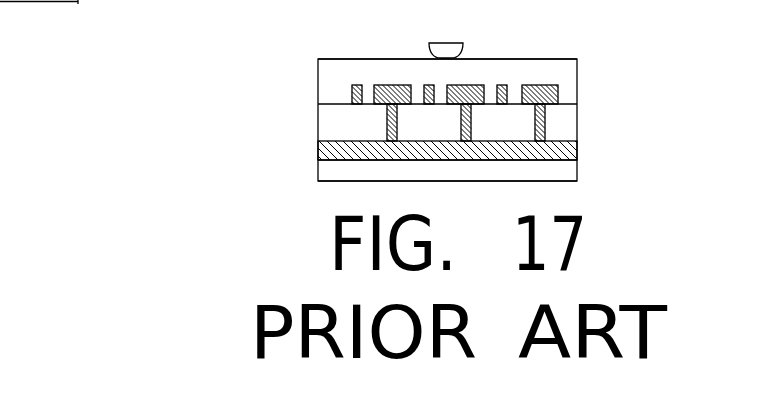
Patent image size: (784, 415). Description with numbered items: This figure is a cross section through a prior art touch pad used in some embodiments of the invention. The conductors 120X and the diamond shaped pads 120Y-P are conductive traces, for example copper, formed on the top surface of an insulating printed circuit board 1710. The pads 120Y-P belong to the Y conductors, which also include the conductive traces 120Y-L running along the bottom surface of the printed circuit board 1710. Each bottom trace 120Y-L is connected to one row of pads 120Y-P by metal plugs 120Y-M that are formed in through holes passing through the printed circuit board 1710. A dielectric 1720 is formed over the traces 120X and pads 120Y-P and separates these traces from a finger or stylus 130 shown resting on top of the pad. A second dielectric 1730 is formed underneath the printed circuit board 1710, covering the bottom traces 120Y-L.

The printed circuit board 1710 is at (577, 117).
The dielectric 1720 is at (559, 60).
The dielectric 1730 is at (562, 182).
The conductive traces 120Y-L is at (577, 152).
The diamond shaped pads 120Y-P is at (558, 94).
The conductors 120X is at (352, 94).
The metal plugs 120Y-M is at (387, 131).
The finger or stylus 130 is at (458, 47).